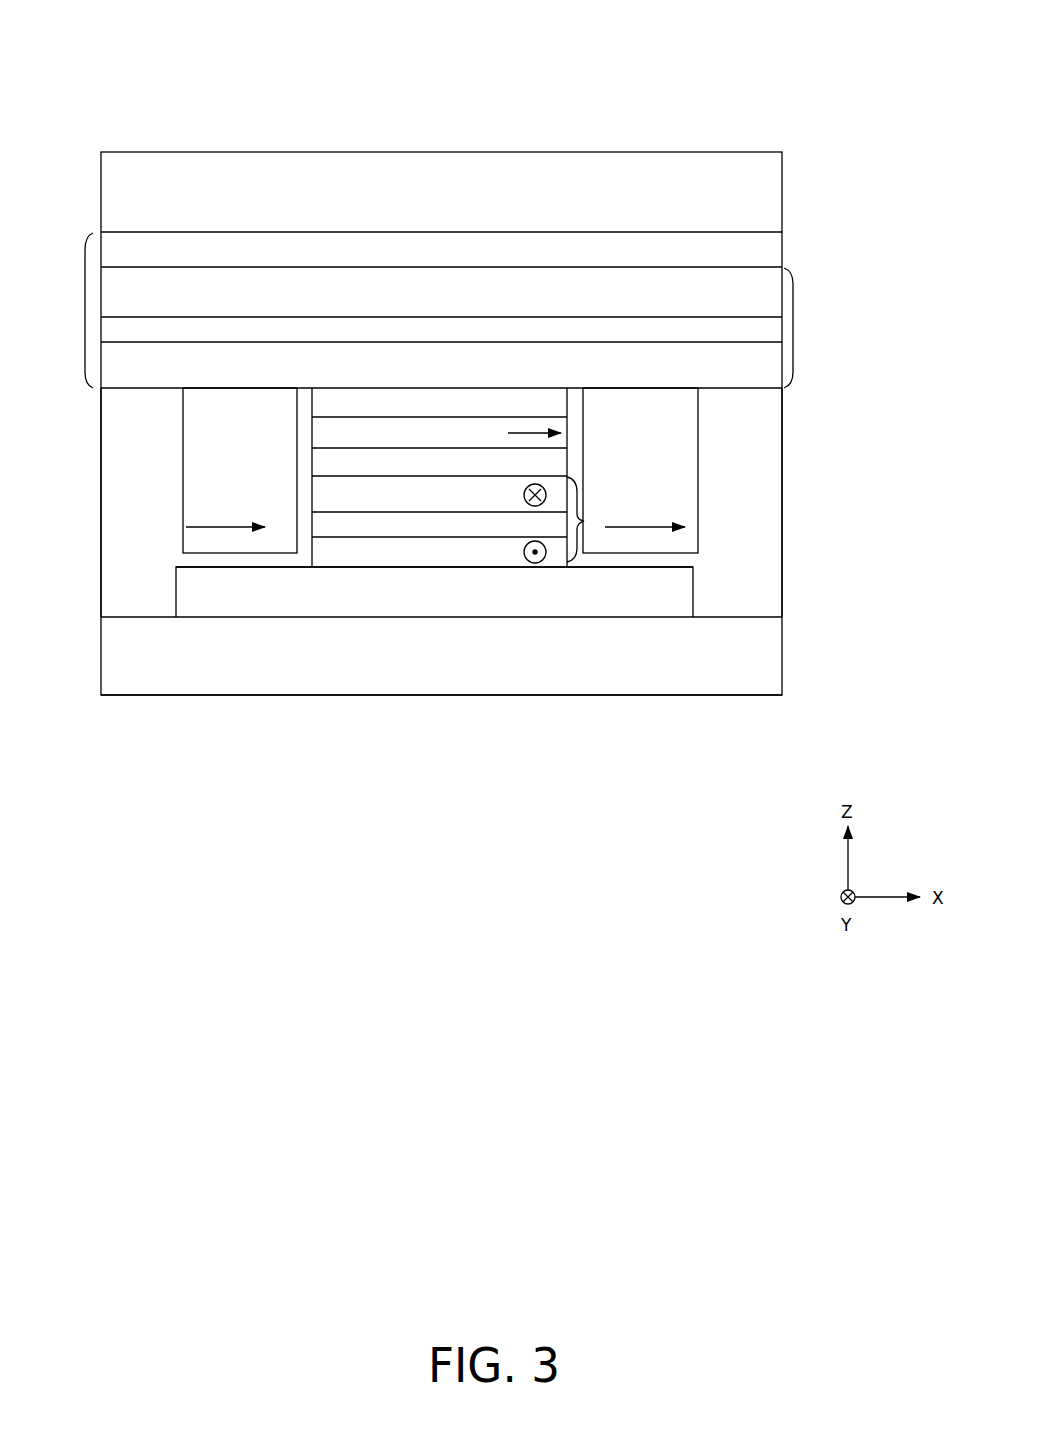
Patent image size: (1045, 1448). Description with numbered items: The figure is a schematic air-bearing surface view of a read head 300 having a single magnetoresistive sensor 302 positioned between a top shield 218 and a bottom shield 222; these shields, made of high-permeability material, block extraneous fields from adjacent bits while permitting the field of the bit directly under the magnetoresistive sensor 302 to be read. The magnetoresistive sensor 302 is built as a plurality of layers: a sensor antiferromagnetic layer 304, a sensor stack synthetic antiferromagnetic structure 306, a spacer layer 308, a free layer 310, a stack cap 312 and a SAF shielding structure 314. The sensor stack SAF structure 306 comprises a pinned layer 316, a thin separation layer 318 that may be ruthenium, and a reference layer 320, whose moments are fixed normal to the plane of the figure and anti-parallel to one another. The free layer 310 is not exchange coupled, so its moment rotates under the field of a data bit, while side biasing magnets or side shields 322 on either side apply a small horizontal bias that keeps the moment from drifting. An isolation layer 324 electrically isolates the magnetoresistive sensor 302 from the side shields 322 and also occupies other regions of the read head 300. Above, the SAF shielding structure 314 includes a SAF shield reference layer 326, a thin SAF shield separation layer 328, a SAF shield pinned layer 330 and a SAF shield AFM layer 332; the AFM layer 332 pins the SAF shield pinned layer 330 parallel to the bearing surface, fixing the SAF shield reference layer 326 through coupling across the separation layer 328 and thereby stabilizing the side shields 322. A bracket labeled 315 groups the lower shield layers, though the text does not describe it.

The read head 300 is at (266, 134).
The top shield 218 is at (441, 208).
The SAF shield AFM layer 332 is at (441, 254).
The SAF shield pinned layer 330 is at (441, 302).
The SAF shield separation layer 328 is at (441, 332).
The SAF shield reference layer 326 is at (441, 373).
The SAF shielding structure 314 is at (85, 313).
The SAF pinned shield structure 315 is at (793, 333).
The magnetoresistive sensor 302 is at (800, 452).
The side biasing magnets or side shields 322 is at (440, 470).
The stack cap 312 is at (439, 405).
The free layer 310 is at (439, 437).
The spacer layer 308 is at (439, 464).
The reference layer 320 is at (439, 498).
The thin separation layer 318 is at (439, 526).
The pinned layer 316 is at (439, 554).
The sensor stack synthetic antiferromagnetic structure 306 is at (584, 521).
The sensor antiferromagnetic layer 304 is at (441, 592).
The bottom shield 222 is at (441, 674).
The isolation layer 324 is at (307, 397).